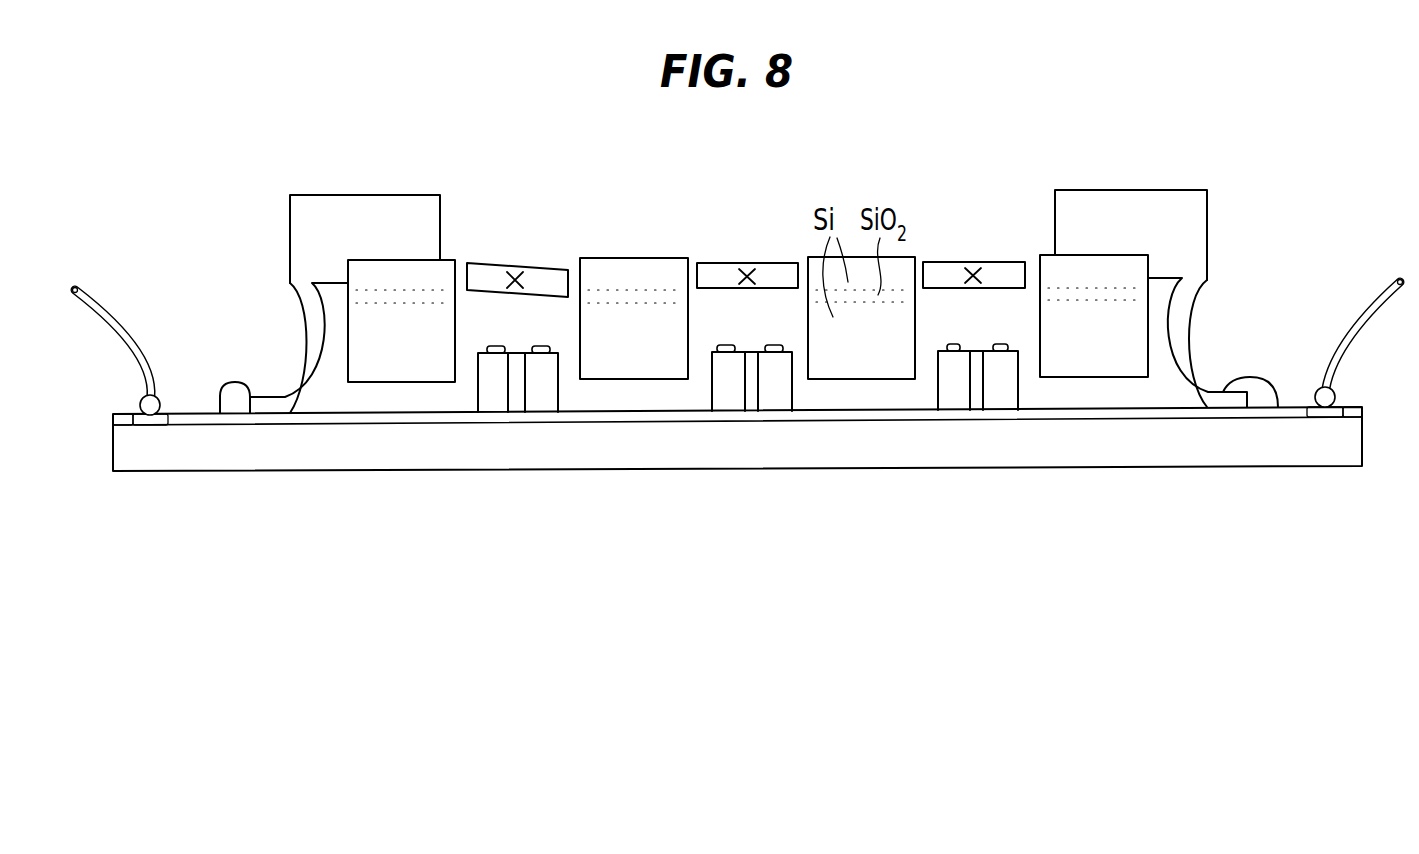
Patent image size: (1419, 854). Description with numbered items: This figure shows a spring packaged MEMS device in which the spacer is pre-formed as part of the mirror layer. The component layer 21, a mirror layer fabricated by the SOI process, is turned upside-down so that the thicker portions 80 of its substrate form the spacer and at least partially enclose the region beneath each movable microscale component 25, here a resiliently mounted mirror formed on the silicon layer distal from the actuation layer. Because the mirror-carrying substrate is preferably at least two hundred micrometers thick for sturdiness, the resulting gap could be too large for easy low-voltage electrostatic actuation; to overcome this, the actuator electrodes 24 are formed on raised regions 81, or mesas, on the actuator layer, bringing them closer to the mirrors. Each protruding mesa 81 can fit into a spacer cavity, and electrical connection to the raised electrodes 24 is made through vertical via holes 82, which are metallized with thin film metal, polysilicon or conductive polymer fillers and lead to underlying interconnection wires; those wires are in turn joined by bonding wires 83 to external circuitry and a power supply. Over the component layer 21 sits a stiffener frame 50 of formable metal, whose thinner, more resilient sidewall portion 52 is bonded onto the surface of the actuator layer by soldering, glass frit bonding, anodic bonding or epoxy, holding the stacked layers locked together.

The component layer 21 is at (437, 270).
The actuator electrodes 24 is at (485, 339).
The movable microscale component 25 is at (721, 262).
The stiffener frame 50 is at (317, 194).
The sidewall portion 52 is at (305, 342).
The thicker portions 80 is at (1085, 365).
The raised regions 81 is at (540, 402).
The via holes 82 is at (515, 400).
The bonding wires 83 is at (107, 307).